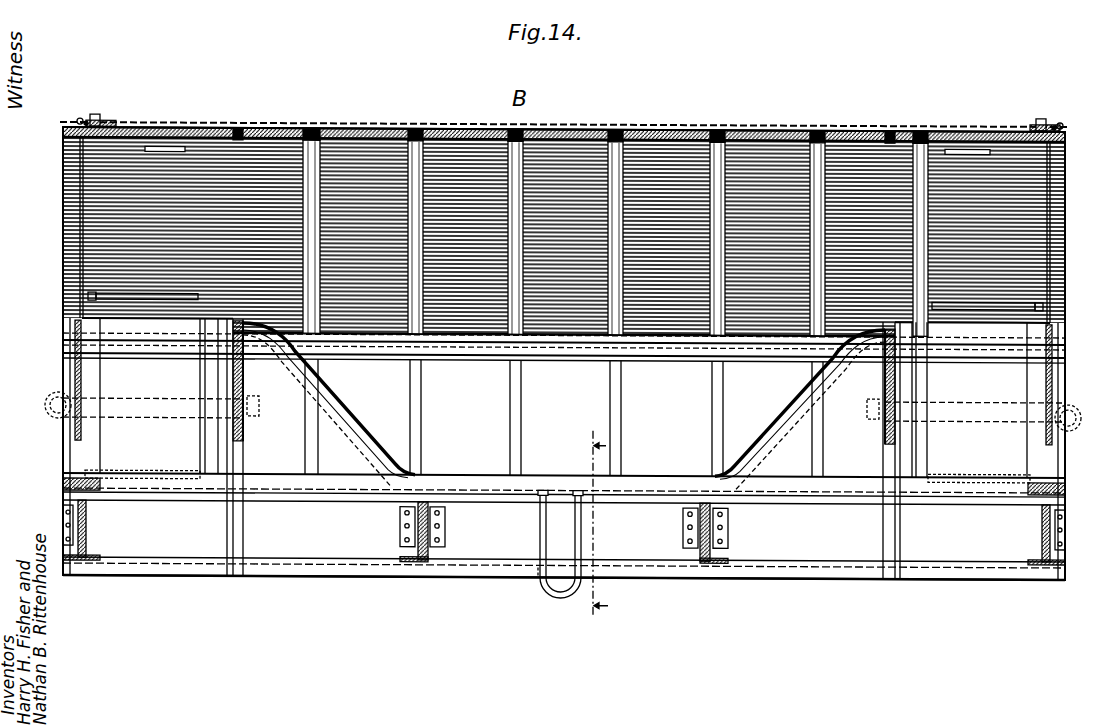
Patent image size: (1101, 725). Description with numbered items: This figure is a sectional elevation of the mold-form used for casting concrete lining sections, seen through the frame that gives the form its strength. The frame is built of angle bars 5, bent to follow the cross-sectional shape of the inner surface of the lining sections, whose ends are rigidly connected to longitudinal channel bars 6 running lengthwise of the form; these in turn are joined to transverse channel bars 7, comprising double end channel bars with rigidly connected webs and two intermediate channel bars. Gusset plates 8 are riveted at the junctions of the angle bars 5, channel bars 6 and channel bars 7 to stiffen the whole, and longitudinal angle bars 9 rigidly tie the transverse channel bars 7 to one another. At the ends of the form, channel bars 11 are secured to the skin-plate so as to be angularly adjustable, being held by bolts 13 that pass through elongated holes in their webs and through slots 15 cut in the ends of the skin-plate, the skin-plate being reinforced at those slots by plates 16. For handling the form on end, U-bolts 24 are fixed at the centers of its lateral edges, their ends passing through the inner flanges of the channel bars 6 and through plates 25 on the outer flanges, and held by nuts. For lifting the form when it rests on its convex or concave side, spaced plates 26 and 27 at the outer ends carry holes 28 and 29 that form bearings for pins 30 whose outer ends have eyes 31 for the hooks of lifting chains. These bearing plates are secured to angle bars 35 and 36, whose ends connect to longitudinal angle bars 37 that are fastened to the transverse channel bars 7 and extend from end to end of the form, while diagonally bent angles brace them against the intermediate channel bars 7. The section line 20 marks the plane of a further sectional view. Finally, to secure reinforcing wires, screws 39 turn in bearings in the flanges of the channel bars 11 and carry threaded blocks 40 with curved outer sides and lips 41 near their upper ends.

The angle bars 5 is at (305, 127).
The channel bars 6 is at (470, 488).
The transverse channel bars 7 is at (86, 537).
The gusset plates 8 is at (422, 412).
The longitudinal angle bars 9 is at (572, 348).
The channel bars 11 is at (84, 120).
The bolts 13 is at (78, 153).
The slots 15 is at (145, 147).
The reinforcing plates 16 is at (182, 147).
The section line 20 is at (597, 524).
The U-bolts 24 is at (563, 590).
The plates 25 is at (548, 566).
The plate 26 is at (75, 375).
The plate 27 is at (246, 388).
The hole 28 is at (75, 342).
The hole 29 is at (72, 415).
The pins 30 is at (162, 412).
The eyes 31 is at (45, 405).
The angle bars 35 is at (96, 372).
The angle bars 36 is at (202, 372).
The longitudinal angle bars 37 is at (232, 325).
The screws 39 is at (76, 121).
The blocks 40 is at (97, 114).
The lips 41 is at (86, 120).